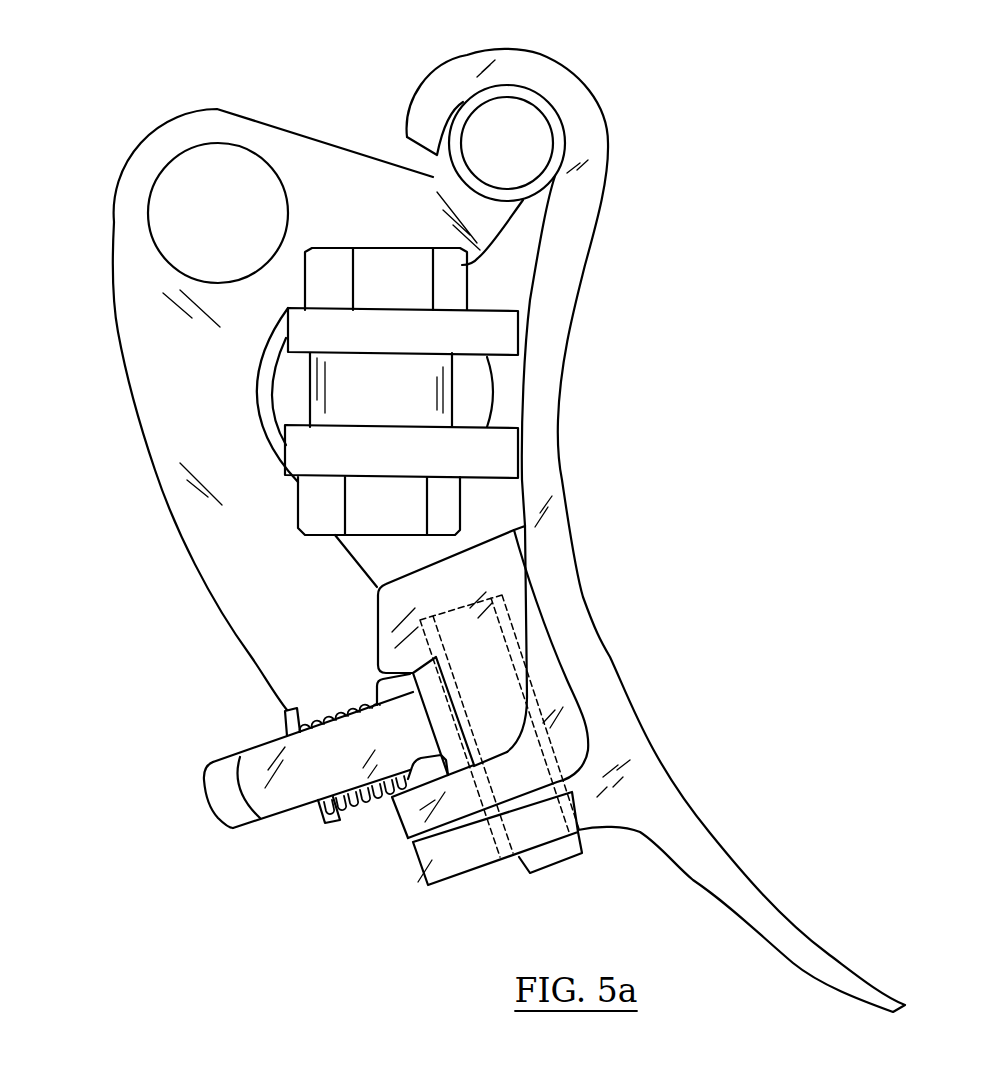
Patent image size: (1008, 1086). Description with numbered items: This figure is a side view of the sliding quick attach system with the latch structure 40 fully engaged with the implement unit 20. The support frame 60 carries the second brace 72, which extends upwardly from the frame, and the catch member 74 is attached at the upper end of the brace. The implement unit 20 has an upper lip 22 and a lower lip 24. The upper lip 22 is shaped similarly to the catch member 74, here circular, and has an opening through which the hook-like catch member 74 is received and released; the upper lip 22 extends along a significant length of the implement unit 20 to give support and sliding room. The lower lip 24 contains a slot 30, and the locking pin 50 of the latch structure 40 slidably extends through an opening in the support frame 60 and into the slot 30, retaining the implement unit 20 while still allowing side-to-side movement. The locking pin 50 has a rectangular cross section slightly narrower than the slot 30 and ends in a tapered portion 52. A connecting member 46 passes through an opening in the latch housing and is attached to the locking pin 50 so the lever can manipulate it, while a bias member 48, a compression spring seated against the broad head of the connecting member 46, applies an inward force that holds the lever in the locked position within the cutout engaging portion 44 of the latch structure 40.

The implement unit 20 is at (608, 657).
The upper lip 22 is at (433, 113).
The lower lip 24 is at (410, 845).
The slot 30 is at (505, 840).
The latch structure 40 is at (205, 768).
The engaging portion 44 is at (387, 608).
The connecting member 46 is at (328, 822).
The bias member 48 is at (358, 802).
The locking pin 50 is at (588, 753).
The tapered portion 52 is at (519, 858).
The support frame 60 is at (417, 835).
The second brace 72 is at (192, 402).
The catch member 74 is at (548, 110).